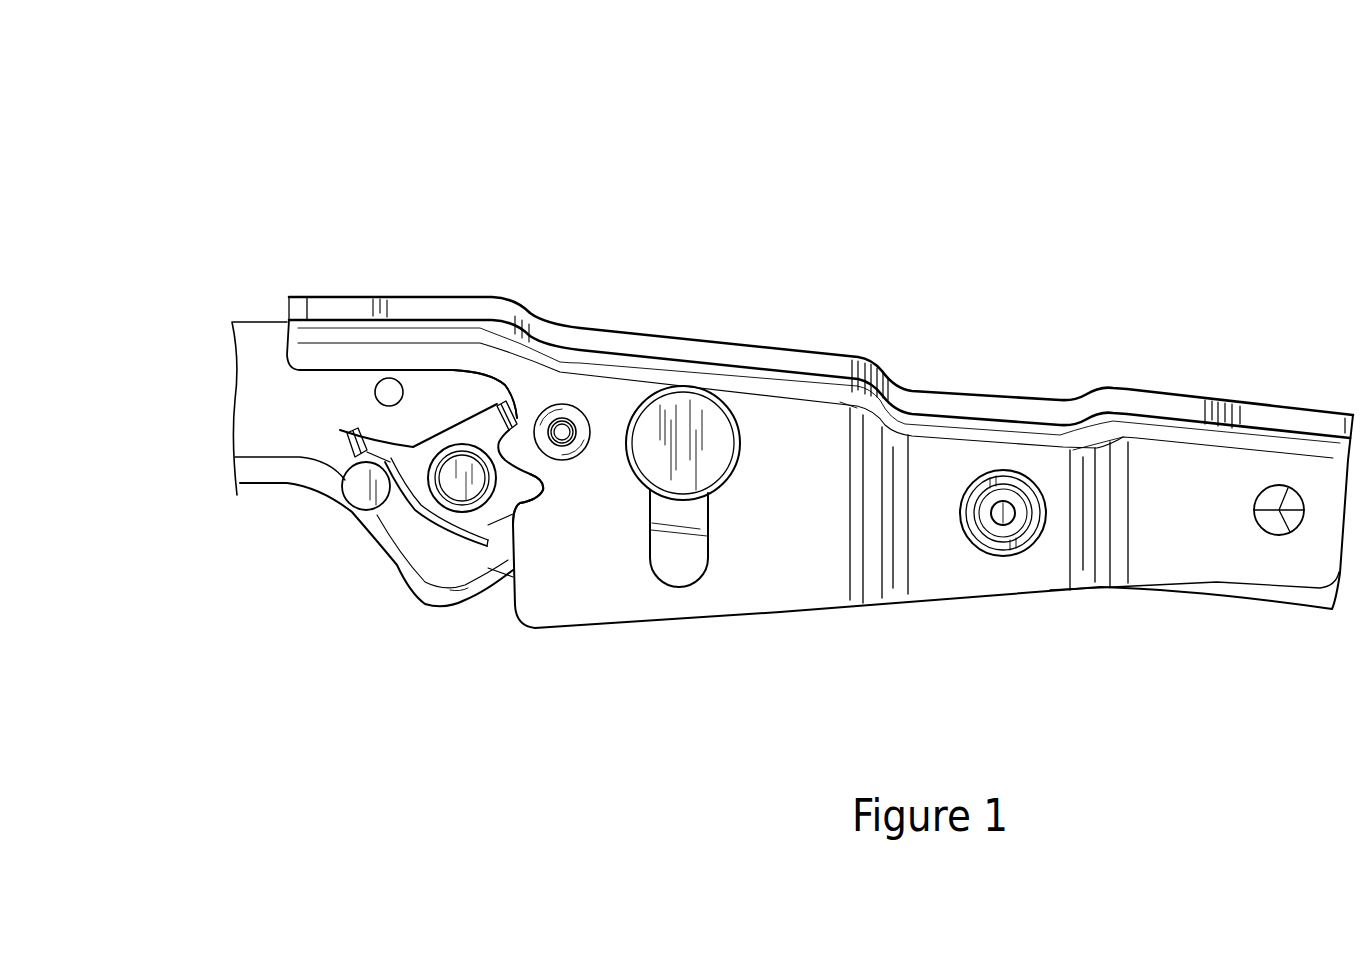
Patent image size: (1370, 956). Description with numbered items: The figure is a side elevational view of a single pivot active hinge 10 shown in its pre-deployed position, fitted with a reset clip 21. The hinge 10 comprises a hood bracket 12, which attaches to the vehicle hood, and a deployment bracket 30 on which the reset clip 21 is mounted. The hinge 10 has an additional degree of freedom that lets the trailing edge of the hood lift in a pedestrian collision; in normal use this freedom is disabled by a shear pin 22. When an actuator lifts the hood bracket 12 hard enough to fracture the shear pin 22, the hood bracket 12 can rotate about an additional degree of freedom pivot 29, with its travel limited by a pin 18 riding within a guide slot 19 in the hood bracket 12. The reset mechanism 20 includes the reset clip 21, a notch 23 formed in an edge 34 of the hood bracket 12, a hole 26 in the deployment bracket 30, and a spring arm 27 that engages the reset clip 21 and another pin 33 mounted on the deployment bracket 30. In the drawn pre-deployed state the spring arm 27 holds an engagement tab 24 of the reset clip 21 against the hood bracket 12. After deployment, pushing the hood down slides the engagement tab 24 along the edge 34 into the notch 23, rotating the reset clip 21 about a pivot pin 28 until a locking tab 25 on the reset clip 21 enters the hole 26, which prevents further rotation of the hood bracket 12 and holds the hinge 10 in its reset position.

The single pivot active hinge 10 is at (993, 306).
The hood bracket 12 is at (782, 422).
The pin 18 is at (690, 448).
The guide slot 19 is at (682, 572).
The reset mechanism 20 is at (384, 521).
The reset clip 21 is at (482, 532).
The shear pin 22 is at (566, 418).
The notch 23 is at (533, 488).
The engagement tab 24 is at (508, 402).
The locking tab 25 is at (340, 430).
The hole 26 is at (389, 392).
The spring arm 27 is at (418, 517).
The pivot pin 28 is at (462, 490).
The additional degree of freedom pivot 29 is at (1271, 522).
The deployment bracket 30 is at (283, 438).
The pin 33 is at (363, 500).
The edge 34 is at (494, 390).